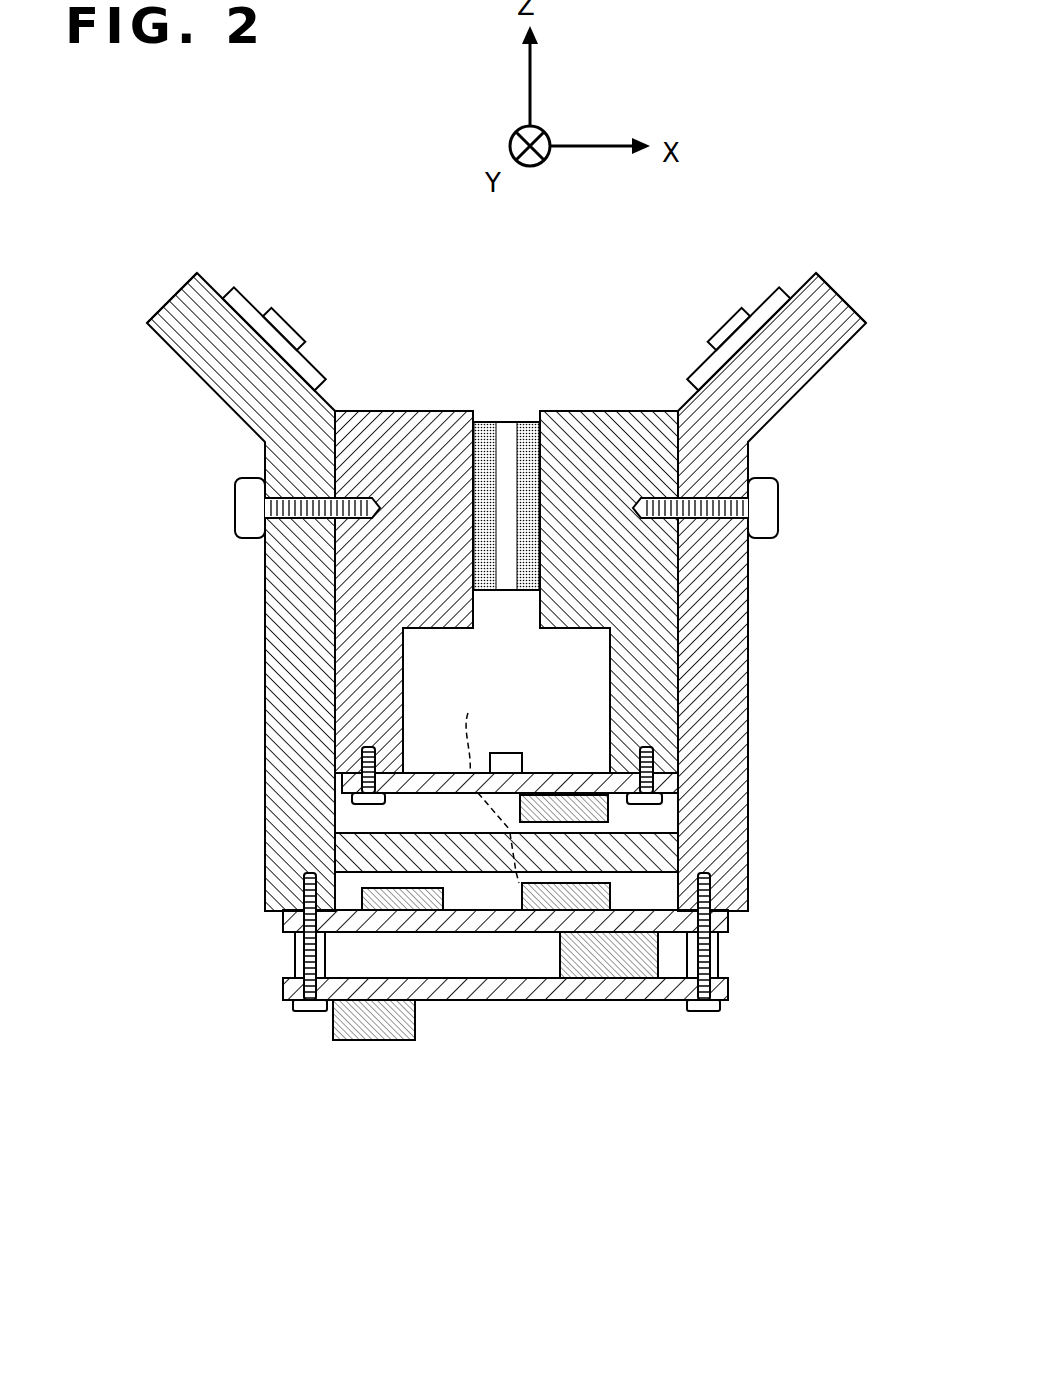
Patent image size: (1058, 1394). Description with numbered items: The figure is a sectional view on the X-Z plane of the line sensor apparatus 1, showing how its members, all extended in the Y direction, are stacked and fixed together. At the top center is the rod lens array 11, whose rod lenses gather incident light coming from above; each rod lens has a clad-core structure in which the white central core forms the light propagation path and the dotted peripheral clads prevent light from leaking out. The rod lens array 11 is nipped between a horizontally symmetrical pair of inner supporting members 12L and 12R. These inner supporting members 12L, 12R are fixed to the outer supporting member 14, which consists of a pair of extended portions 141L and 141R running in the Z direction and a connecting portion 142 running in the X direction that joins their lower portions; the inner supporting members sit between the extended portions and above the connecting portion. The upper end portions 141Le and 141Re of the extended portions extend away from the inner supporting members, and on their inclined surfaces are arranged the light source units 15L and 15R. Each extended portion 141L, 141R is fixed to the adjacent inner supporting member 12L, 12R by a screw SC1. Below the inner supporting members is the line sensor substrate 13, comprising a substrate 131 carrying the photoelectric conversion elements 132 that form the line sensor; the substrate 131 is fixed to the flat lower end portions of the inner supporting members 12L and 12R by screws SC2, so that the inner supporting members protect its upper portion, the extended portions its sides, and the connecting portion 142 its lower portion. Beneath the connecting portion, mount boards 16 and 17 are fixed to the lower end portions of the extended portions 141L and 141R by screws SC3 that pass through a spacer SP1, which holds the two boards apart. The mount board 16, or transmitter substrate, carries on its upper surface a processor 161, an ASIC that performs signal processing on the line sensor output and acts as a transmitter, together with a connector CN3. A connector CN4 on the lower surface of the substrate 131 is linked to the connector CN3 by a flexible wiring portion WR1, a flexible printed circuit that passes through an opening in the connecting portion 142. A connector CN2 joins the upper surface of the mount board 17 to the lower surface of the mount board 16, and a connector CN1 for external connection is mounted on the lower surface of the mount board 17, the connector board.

The line sensor apparatus 1 is at (118, 203).
The rod lens array 11 is at (505, 422).
The inner supporting member 12L is at (405, 411).
The inner supporting member 12R is at (612, 411).
The line sensor substrate 13 is at (255, 1250).
The substrate 131 is at (350, 801).
The photoelectric conversion elements 132 is at (512, 753).
The outer supporting member 14 is at (532, 1260).
The extended portion 141L is at (265, 635).
The extended portion 141R is at (750, 708).
The upper end portion 141Le is at (150, 322).
The upper end portion 141Re is at (848, 305).
The connecting portion 142 is at (481, 873).
The light source unit 15L is at (277, 313).
The light source unit 15R is at (743, 315).
The mount board 16 is at (728, 919).
The processor 161 is at (441, 912).
The mount board 17 is at (727, 993).
The connector CN1 is at (360, 1042).
The connector CN2 is at (622, 968).
The connector CN3 is at (540, 912).
The connector CN4 is at (608, 812).
The screw SC1 is at (235, 507).
The screws SC2 is at (352, 801).
The screws SC3 is at (304, 1012).
The spacer SP1 is at (293, 960).
The flexible wiring portion WR1 is at (473, 784).